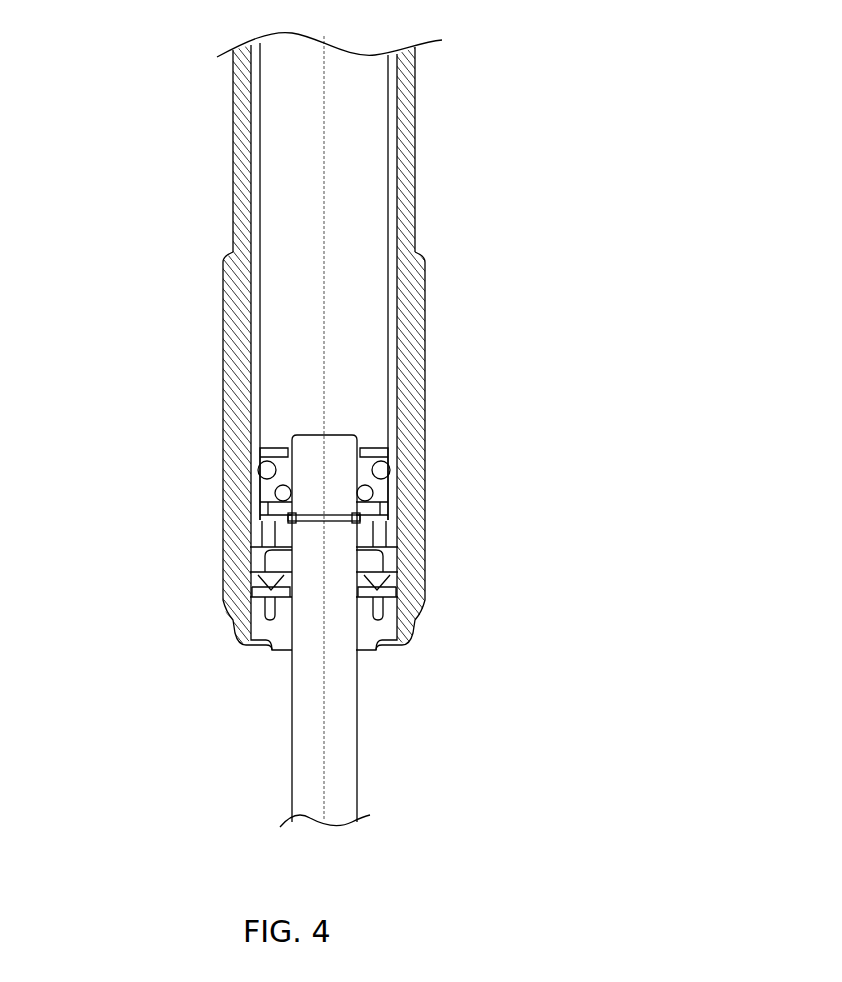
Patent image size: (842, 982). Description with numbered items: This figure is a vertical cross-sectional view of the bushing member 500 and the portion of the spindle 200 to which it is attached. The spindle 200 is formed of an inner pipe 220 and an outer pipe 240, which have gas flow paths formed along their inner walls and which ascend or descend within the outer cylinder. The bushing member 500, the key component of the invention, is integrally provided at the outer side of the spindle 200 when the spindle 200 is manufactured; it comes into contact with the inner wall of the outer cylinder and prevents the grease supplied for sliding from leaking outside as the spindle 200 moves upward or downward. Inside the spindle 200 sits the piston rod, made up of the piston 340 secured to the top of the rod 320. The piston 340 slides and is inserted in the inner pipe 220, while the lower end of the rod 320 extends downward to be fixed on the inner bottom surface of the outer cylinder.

The spindle 200 is at (110, 88).
The inner pipe 220 is at (263, 143).
The outer pipe 240 is at (232, 177).
The bushing member 500 is at (223, 411).
The piston 340 is at (363, 448).
The rod 320 is at (350, 703).